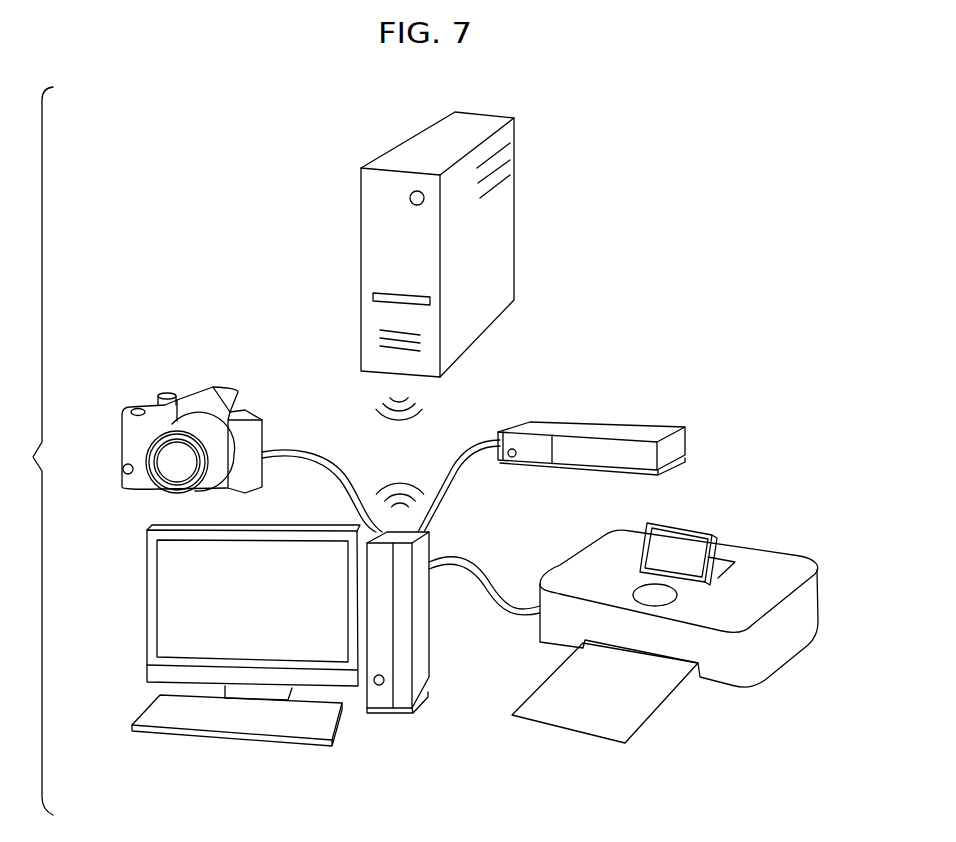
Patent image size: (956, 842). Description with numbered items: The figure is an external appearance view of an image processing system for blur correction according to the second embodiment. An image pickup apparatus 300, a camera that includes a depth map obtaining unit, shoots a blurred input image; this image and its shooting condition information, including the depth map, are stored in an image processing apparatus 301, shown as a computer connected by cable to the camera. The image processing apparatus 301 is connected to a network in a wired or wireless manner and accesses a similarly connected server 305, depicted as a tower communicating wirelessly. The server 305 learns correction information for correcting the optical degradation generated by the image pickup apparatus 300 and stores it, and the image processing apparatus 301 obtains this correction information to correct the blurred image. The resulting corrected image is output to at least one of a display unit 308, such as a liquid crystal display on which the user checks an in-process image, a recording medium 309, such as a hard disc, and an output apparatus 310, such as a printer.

The image pickup apparatus 300 is at (127, 416).
The image processing apparatus 301 is at (395, 710).
The server 305 is at (362, 167).
The display unit 308 is at (146, 607).
The recording medium 309 is at (685, 432).
The output apparatus 310 is at (760, 552).